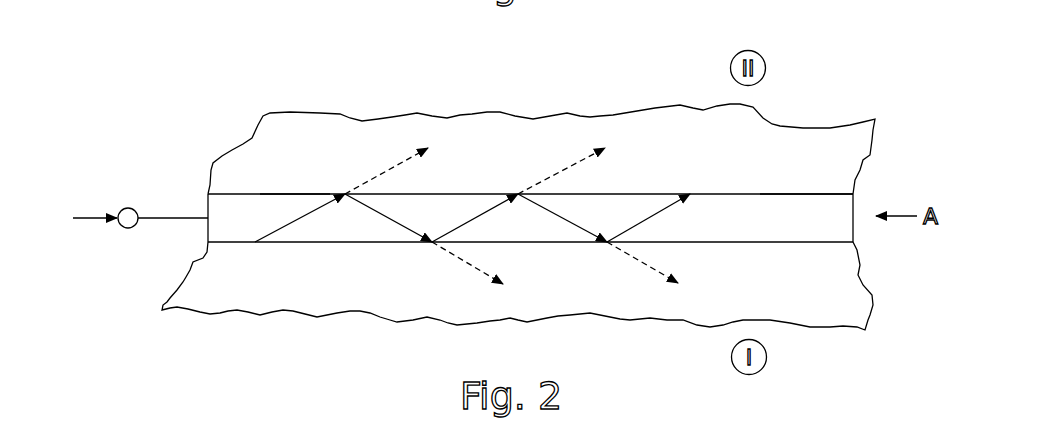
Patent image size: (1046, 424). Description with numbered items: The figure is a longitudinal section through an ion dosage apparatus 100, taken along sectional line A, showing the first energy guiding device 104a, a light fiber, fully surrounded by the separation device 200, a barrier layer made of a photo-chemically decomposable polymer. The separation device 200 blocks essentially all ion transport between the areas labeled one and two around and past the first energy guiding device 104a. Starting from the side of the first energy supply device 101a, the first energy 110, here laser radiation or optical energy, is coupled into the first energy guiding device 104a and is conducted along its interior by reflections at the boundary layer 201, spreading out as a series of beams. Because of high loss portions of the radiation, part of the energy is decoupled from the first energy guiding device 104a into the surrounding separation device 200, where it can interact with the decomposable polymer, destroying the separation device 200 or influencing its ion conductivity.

The ion dosage apparatus 100 is at (233, 92).
The separation device 200 is at (510, 140).
The boundary layer 201 is at (290, 194).
The first energy guiding device 104a is at (807, 194).
The first energy 110 is at (87, 212).
The first energy supply device 101a is at (127, 207).